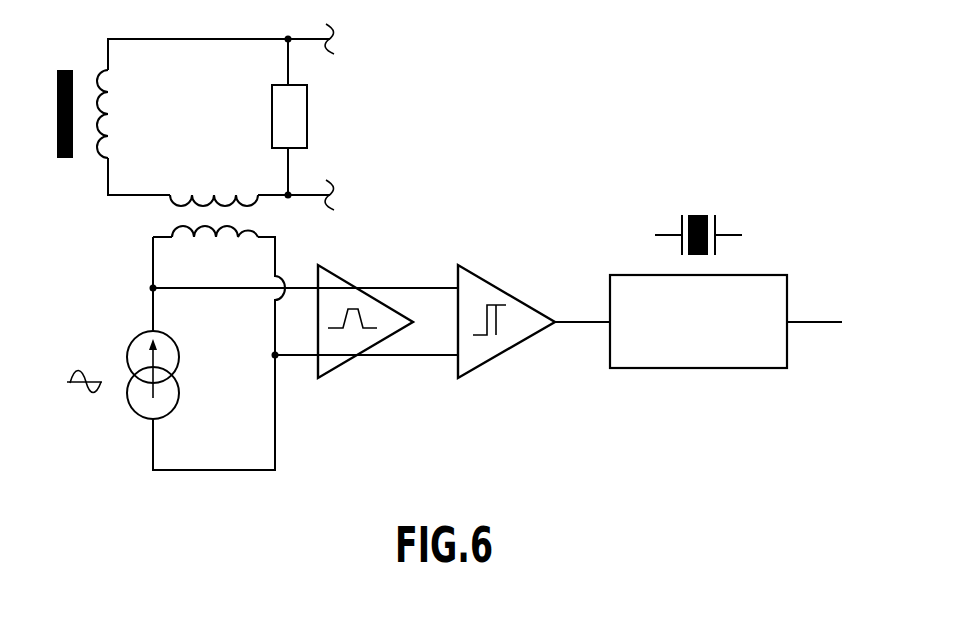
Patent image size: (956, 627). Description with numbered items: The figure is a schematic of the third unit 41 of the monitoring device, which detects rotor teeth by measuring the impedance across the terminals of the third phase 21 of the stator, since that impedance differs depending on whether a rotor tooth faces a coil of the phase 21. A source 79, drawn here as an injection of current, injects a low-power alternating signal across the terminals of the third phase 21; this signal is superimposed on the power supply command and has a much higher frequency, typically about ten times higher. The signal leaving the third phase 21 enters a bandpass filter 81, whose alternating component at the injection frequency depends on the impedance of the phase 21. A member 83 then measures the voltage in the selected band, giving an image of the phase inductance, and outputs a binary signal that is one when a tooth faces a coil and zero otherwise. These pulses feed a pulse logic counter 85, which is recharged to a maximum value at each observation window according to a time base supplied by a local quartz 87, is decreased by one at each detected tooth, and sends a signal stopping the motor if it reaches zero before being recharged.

The third phase 21 is at (99, 152).
The third unit 41 is at (560, 233).
The source 79 is at (205, 470).
The bandpass filter 81 is at (340, 274).
The member for measuring the voltage 83 is at (487, 277).
The pulse logic counter 85 is at (732, 369).
The local quartz 87 is at (718, 222).